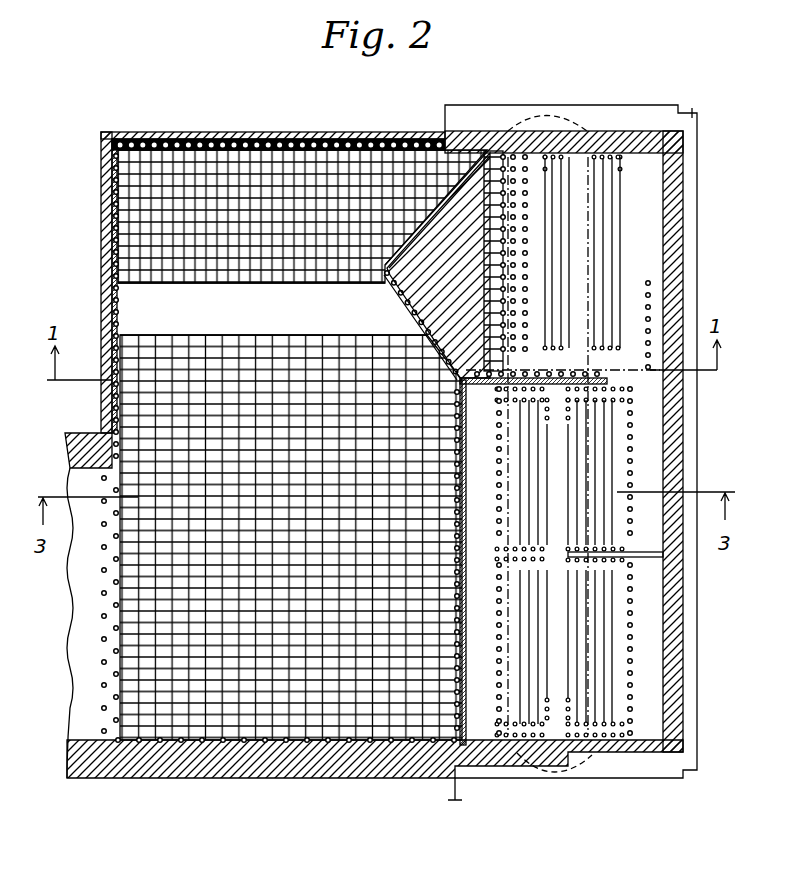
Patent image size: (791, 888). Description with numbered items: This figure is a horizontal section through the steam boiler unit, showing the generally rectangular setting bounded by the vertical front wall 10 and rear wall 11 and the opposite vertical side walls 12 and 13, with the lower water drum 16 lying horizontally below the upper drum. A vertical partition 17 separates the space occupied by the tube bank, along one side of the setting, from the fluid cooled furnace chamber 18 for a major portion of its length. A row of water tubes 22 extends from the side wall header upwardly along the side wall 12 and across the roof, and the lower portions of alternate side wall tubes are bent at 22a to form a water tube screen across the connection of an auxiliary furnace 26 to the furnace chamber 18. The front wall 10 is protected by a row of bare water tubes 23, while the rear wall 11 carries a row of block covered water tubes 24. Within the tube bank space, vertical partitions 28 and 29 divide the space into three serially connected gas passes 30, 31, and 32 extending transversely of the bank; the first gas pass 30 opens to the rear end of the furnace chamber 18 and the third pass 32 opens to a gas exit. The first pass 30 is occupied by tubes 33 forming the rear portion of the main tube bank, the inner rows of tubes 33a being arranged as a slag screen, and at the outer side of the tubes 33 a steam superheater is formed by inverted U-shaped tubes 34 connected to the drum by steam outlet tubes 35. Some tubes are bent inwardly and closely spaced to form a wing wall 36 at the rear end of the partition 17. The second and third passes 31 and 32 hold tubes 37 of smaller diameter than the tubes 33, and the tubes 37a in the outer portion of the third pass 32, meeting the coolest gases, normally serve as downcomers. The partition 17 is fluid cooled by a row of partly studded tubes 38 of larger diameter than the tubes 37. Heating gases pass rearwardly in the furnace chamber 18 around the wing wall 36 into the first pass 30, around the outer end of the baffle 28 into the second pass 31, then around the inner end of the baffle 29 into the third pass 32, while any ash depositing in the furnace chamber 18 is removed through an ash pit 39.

The front wall 10 is at (332, 778).
The rear wall 11 is at (305, 132).
The side wall 12 is at (101, 258).
The side wall 13 is at (683, 456).
The lower water drum 16 is at (600, 118).
The partition 17 is at (472, 578).
The furnace chamber 18 is at (291, 537).
The water tubes 22 is at (120, 330).
The bent side wall tubes 22a is at (104, 690).
The bare water tubes 23 is at (275, 738).
The block covered water tubes 24 is at (235, 140).
The auxiliary furnace 26 is at (81, 623).
The partition 28 is at (545, 394).
The partition 29 is at (640, 552).
The first gas pass 30 is at (582, 252).
The second gas pass 31 is at (563, 474).
The third gas pass 32 is at (563, 652).
The tubes 33 is at (540, 220).
The slag screen tubes 33a is at (477, 285).
The superheater tubes 34 is at (623, 170).
The steam outlet tubes 35 is at (648, 290).
The wing wall 36 is at (392, 290).
The tubes 37 is at (636, 415).
The downcomer tubes 37a is at (632, 665).
The partly studded tubes 38 is at (458, 497).
The ash pit 39 is at (272, 309).